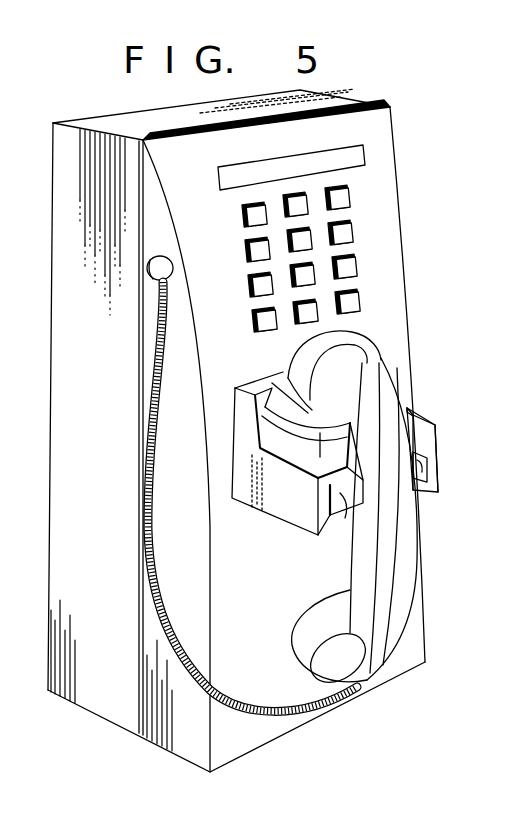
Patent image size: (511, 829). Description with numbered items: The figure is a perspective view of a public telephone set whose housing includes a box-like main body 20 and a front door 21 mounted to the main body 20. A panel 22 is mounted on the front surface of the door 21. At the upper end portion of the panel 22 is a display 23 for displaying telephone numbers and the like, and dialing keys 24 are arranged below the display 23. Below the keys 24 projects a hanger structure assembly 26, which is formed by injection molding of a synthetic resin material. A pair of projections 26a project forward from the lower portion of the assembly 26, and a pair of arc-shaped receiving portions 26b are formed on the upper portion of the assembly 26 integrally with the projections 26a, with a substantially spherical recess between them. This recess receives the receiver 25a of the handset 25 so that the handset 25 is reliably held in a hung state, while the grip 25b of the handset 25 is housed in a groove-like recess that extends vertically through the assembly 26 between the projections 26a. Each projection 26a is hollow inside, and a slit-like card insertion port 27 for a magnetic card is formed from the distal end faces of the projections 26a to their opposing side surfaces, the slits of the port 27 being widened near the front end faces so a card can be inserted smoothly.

The main body 20 is at (110, 708).
The front door 21 is at (173, 743).
The panel 22 is at (398, 298).
The display 23 is at (365, 152).
The dialing keys 24 is at (358, 300).
The handset 25 is at (323, 483).
The receiver 25a is at (360, 352).
The grip 25b is at (395, 540).
The hanger structure assembly 26 is at (433, 487).
The projections 26a is at (435, 435).
The receiving portions 26b is at (282, 440).
The card insertion port 27 is at (420, 460).